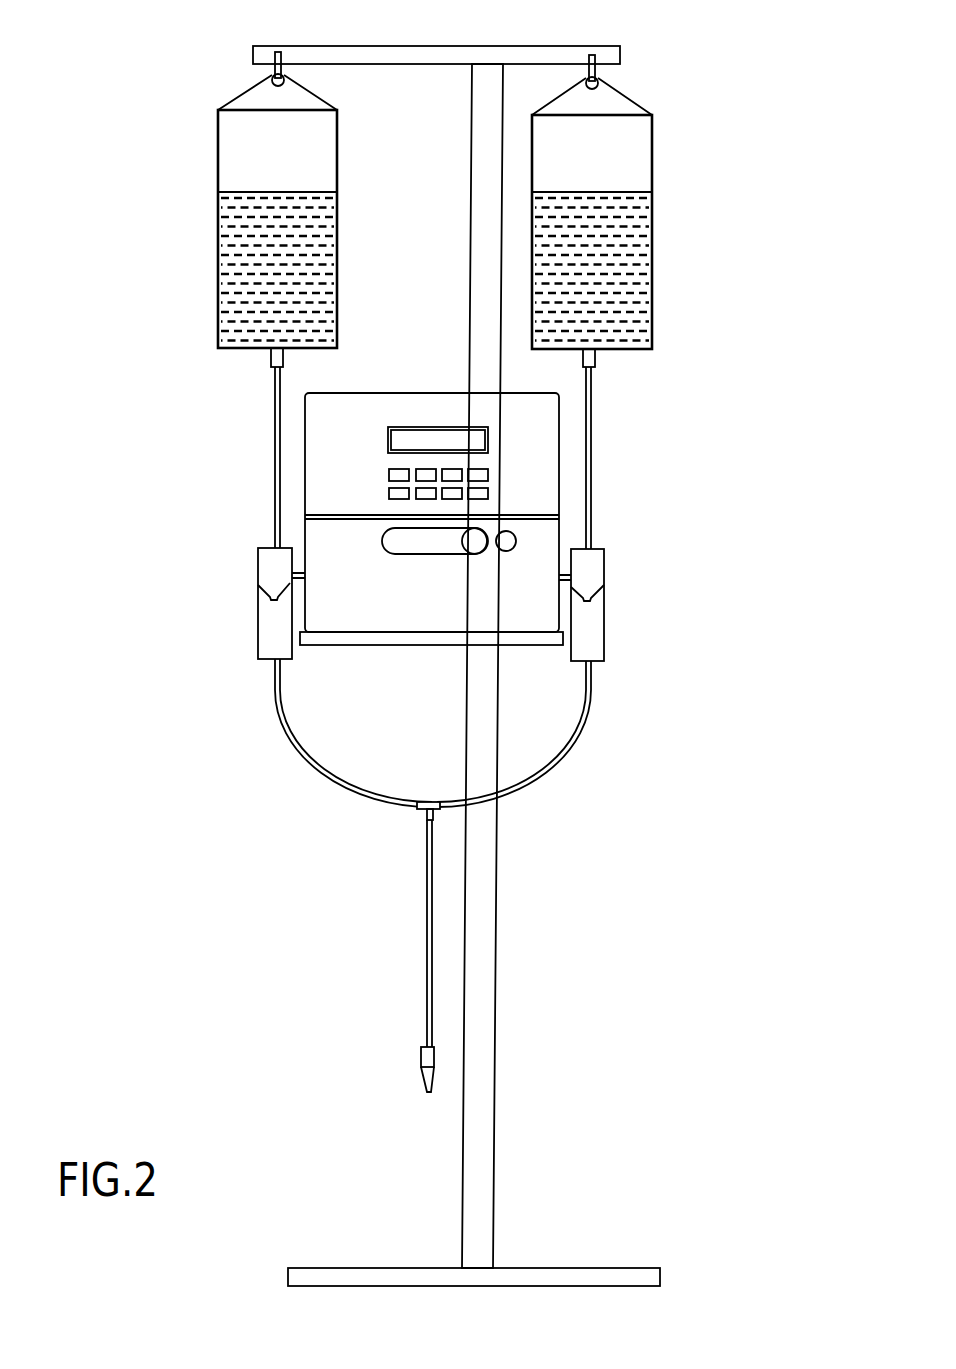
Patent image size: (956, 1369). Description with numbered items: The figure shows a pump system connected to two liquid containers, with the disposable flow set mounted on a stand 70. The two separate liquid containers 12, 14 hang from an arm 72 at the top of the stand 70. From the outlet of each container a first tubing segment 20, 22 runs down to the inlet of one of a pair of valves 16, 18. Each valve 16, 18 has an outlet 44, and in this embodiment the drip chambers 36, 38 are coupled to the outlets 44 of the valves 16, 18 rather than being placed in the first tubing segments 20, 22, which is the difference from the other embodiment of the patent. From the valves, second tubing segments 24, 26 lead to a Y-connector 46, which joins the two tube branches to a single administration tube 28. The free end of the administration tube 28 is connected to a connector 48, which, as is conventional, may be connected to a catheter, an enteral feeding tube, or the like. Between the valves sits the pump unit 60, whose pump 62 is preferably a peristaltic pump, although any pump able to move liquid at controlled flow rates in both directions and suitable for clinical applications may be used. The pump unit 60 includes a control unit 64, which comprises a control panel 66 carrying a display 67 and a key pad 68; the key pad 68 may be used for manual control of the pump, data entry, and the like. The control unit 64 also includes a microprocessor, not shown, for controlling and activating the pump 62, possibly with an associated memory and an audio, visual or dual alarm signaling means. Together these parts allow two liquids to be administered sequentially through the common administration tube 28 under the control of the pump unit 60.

The liquid container 12 is at (218, 143).
The liquid container 14 is at (645, 171).
The valve 16 is at (270, 570).
The valve 18 is at (595, 567).
The first tubing segment 20 is at (275, 395).
The first tubing segment 22 is at (591, 392).
The second tubing segment 24 is at (315, 777).
The second tubing segment 26 is at (565, 757).
The administration tube 28 is at (427, 940).
The drip chamber 36 is at (270, 630).
The drip chamber 38 is at (587, 637).
The outlet 44 is at (270, 600).
The Y-connector 46 is at (425, 811).
The connector 48 is at (424, 1068).
The pump unit 60 is at (559, 452).
The pump 62 is at (362, 583).
The control unit 64 is at (355, 412).
The control panel 66 is at (330, 440).
The display 67 is at (440, 440).
The key pad 68 is at (485, 492).
The stand 70 is at (498, 843).
The arm 72 is at (340, 46).